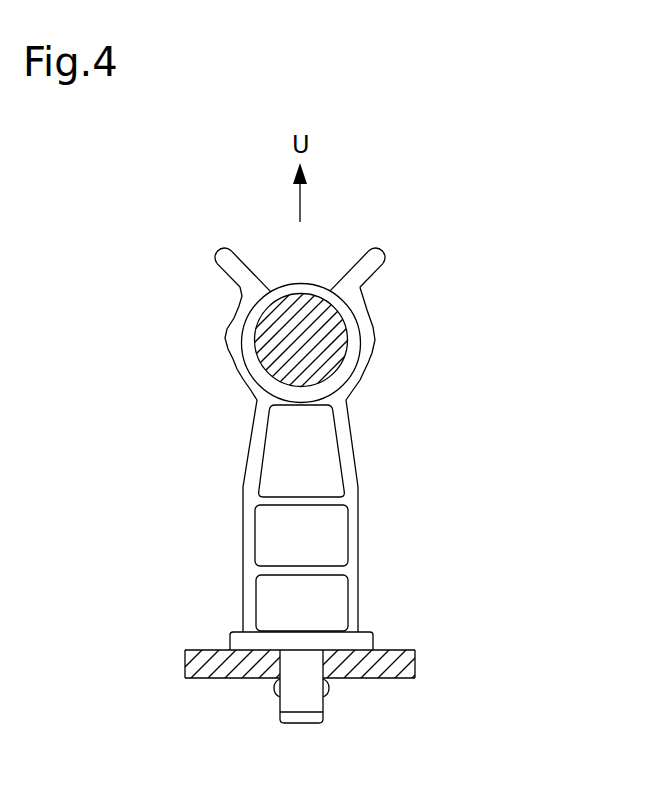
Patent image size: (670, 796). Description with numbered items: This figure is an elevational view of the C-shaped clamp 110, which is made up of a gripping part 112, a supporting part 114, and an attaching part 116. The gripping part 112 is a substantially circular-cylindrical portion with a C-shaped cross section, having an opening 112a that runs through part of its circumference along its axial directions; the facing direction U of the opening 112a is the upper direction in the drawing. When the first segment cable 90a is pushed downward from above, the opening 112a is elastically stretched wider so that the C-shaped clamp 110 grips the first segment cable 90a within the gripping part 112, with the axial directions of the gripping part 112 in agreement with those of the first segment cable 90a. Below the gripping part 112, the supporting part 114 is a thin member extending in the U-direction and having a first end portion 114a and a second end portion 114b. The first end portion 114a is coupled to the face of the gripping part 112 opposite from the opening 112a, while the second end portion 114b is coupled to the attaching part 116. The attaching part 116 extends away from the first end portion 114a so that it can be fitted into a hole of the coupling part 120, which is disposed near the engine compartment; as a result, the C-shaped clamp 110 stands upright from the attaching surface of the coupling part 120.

The first segment cable 90a is at (285, 292).
The C-shaped clamp 110 is at (403, 253).
The gripping part 112 is at (366, 307).
The opening 112a is at (320, 283).
The supporting part 114 is at (355, 513).
The first end portion 114a is at (350, 395).
The second end portion 114b is at (361, 630).
The attaching part 116 is at (327, 700).
The coupling part 120 is at (207, 650).